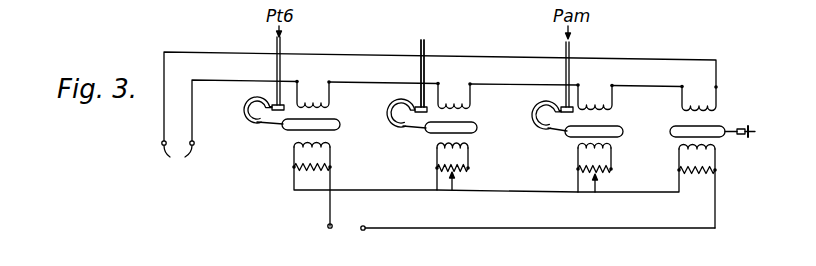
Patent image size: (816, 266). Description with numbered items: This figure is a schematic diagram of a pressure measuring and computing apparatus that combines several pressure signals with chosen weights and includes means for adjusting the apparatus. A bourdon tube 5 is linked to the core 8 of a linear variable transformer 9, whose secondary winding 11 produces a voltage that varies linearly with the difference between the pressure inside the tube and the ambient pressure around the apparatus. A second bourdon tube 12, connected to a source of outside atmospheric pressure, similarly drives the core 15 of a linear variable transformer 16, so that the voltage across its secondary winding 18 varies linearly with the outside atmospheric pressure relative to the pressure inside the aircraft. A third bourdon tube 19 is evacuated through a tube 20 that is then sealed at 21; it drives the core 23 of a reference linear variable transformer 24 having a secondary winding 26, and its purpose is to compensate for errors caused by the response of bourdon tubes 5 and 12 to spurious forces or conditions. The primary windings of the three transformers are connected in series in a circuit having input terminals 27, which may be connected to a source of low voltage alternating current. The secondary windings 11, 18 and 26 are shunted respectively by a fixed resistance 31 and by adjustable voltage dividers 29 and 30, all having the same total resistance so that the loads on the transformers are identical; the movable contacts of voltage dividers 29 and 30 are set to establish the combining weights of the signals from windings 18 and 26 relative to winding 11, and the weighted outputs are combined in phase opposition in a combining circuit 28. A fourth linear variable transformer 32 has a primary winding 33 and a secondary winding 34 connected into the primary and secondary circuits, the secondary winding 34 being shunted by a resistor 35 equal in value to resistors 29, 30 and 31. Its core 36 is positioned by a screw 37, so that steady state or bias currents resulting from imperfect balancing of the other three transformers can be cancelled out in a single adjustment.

The bourdon tube 5 is at (251, 119).
The core 8 is at (340, 128).
The linear variable transformer 9 is at (334, 114).
The secondary winding 11 is at (294, 152).
The second bourdon tube 12 is at (547, 129).
The core 15 is at (624, 131).
The linear variable transformer 16 is at (620, 120).
The secondary winding 18 is at (611, 157).
The third bourdon tube 19 is at (392, 122).
The tube 20 is at (426, 48).
The seal 21 is at (423, 40).
The core 23 is at (478, 131).
The linear variable transformer 24 is at (475, 117).
The secondary winding 26 is at (437, 154).
The input terminals 27 is at (178, 161).
The combining means circuit 28 is at (719, 236).
The resistance 29 is at (600, 171).
The resistance 30 is at (436, 171).
The resistance 31 is at (311, 170).
The fourth linear variable transformer 32 is at (722, 121).
The primary winding 33 is at (718, 110).
The secondary winding 34 is at (713, 163).
The resistor 35 is at (700, 173).
The core 36 is at (720, 137).
The screw 37 is at (753, 136).